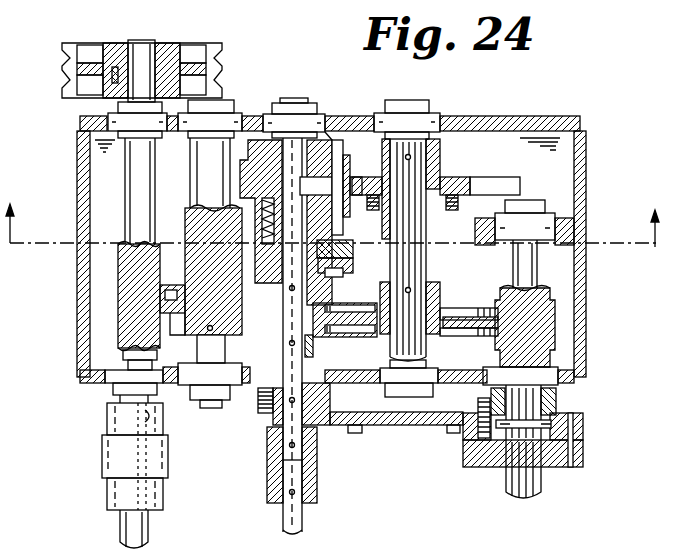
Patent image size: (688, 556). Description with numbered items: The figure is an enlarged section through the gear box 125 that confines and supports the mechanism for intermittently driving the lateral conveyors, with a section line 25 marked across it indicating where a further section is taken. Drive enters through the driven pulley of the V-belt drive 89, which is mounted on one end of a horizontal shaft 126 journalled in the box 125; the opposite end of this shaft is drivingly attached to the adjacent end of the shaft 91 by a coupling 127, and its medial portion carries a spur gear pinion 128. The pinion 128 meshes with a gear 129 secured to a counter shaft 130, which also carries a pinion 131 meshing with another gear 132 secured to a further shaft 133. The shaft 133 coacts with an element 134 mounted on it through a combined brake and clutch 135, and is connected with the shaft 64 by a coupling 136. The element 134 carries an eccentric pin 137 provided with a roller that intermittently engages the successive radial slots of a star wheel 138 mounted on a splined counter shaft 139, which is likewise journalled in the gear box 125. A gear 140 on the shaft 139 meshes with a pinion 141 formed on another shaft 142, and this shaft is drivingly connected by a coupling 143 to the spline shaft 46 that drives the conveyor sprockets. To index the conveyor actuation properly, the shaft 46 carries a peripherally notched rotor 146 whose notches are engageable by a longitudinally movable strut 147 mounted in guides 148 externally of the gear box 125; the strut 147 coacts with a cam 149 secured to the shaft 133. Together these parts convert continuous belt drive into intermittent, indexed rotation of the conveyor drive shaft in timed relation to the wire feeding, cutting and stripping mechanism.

The V-belt drive 89 is at (62, 62).
The gear box 125 is at (543, 117).
The horizontal shaft 126 is at (126, 176).
The coupling 127 is at (118, 457).
The spur gear pinion 128 is at (118, 298).
The gear 129 is at (172, 320).
The counter shaft 130 is at (200, 179).
The pinion 131 is at (190, 240).
The gear 132 is at (340, 272).
The shaft 133 is at (313, 337).
The element 134 is at (328, 134).
The combined brake and clutch 135 is at (345, 245).
The coupling 136 is at (318, 464).
The eccentric pin 137 is at (341, 142).
The star wheel 138 is at (472, 180).
The splined counter shaft 139 is at (418, 266).
The gear 140 is at (462, 312).
The pinion 141 is at (545, 322).
The shaft 142 is at (528, 273).
The coupling 143 is at (548, 402).
The peripherally notched rotor 146 is at (583, 432).
The strut 147 is at (385, 426).
The guides 148 is at (452, 434).
The cam 149 is at (246, 405).
The section line 25 is at (332, 235).
The spline shaft 46 is at (541, 483).
The shaft 64 is at (283, 522).
The shaft 91 is at (138, 534).